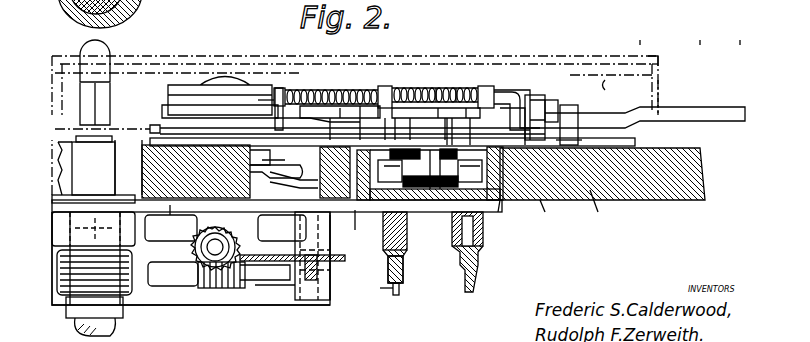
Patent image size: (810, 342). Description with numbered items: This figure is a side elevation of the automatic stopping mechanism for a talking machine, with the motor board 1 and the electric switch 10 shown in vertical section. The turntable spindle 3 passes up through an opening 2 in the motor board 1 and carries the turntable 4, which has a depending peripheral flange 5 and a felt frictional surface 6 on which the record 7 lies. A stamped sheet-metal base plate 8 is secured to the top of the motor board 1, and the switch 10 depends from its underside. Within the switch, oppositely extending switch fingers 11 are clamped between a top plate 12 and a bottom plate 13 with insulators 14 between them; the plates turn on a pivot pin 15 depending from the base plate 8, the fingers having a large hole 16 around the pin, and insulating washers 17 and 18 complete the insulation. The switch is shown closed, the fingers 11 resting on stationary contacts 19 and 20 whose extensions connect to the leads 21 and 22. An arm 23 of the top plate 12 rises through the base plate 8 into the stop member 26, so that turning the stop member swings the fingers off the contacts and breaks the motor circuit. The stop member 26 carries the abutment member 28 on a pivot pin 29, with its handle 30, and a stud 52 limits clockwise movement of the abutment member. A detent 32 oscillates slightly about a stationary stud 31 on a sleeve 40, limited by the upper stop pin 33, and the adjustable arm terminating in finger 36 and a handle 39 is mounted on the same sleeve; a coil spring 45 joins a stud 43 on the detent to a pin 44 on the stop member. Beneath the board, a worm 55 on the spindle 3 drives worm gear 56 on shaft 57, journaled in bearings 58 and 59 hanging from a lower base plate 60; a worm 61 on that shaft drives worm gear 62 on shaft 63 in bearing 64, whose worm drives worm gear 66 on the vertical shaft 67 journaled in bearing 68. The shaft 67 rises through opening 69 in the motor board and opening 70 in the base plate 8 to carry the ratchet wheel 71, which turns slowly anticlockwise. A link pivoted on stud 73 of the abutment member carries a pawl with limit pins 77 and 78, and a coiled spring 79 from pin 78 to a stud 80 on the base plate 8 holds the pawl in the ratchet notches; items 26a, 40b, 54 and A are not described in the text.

The motor board 1 is at (690, 176).
The hole or opening 2 is at (97, 171).
The turntable spindle 3 is at (86, 165).
The turntable 4 is at (611, 87).
The peripheral flange 5 is at (660, 88).
The top frictional surface 6 is at (660, 68).
The record 7 is at (652, 56).
The base plate 8 is at (635, 134).
The electric switch 10 is at (485, 230).
The switch fingers 11 is at (458, 88).
The top plate 12 is at (437, 88).
The bottom plate 13 is at (407, 230).
The insulators 14 is at (440, 108).
The pivot pin 15 is at (405, 266).
The large hole 16 is at (401, 280).
The washer 17 is at (399, 292).
The washer 18 is at (449, 118).
The stationary contact 19 is at (360, 212).
The stationary contact 20 is at (480, 225).
The electric lead 21 is at (380, 288).
The electric lead 22 is at (473, 290).
The arm 23 is at (454, 118).
The stop member 26 is at (415, 88).
The passage 26a is at (599, 209).
The abutment member 28 is at (468, 108).
The pivot pin 29 is at (518, 92).
The handle 30 is at (745, 114).
The stud 31 is at (695, 24).
The detent 32 is at (272, 100).
The upper stop pin 33 is at (378, 106).
The finger 36 is at (148, 128).
The handle 39 is at (341, 108).
The sleeve 40 is at (649, 24).
The arm end 40b is at (730, 23).
The stud 43 is at (386, 118).
The stud or pin 44 is at (540, 92).
The coil spring 45 is at (542, 110).
The stud 52 is at (547, 107).
The post 54 is at (578, 110).
The worm 55 is at (150, 262).
The worm gear 56 is at (115, 325).
The shaft 57 is at (196, 275).
The bearing 58 is at (130, 290).
The bearing 59 is at (312, 300).
The base plate 60 is at (171, 223).
The worm 61 is at (225, 268).
The worm gear 62 is at (205, 235).
The shaft 63 is at (202, 258).
The bearing 64 is at (270, 280).
The worm gear 66 is at (335, 262).
The vertical shaft 67 is at (280, 285).
The bearing 68 is at (282, 228).
The opening 69 is at (276, 169).
The opening 70 is at (260, 156).
The ratchet wheel 71 is at (342, 212).
The pivot pin or stud 73 is at (290, 168).
The stop or limit pin 77 is at (306, 106).
The stop or limit pin 78 is at (220, 94).
The coiled spring 79 is at (326, 91).
The pin or stud 80 is at (364, 92).
The chamber A is at (95, 86).